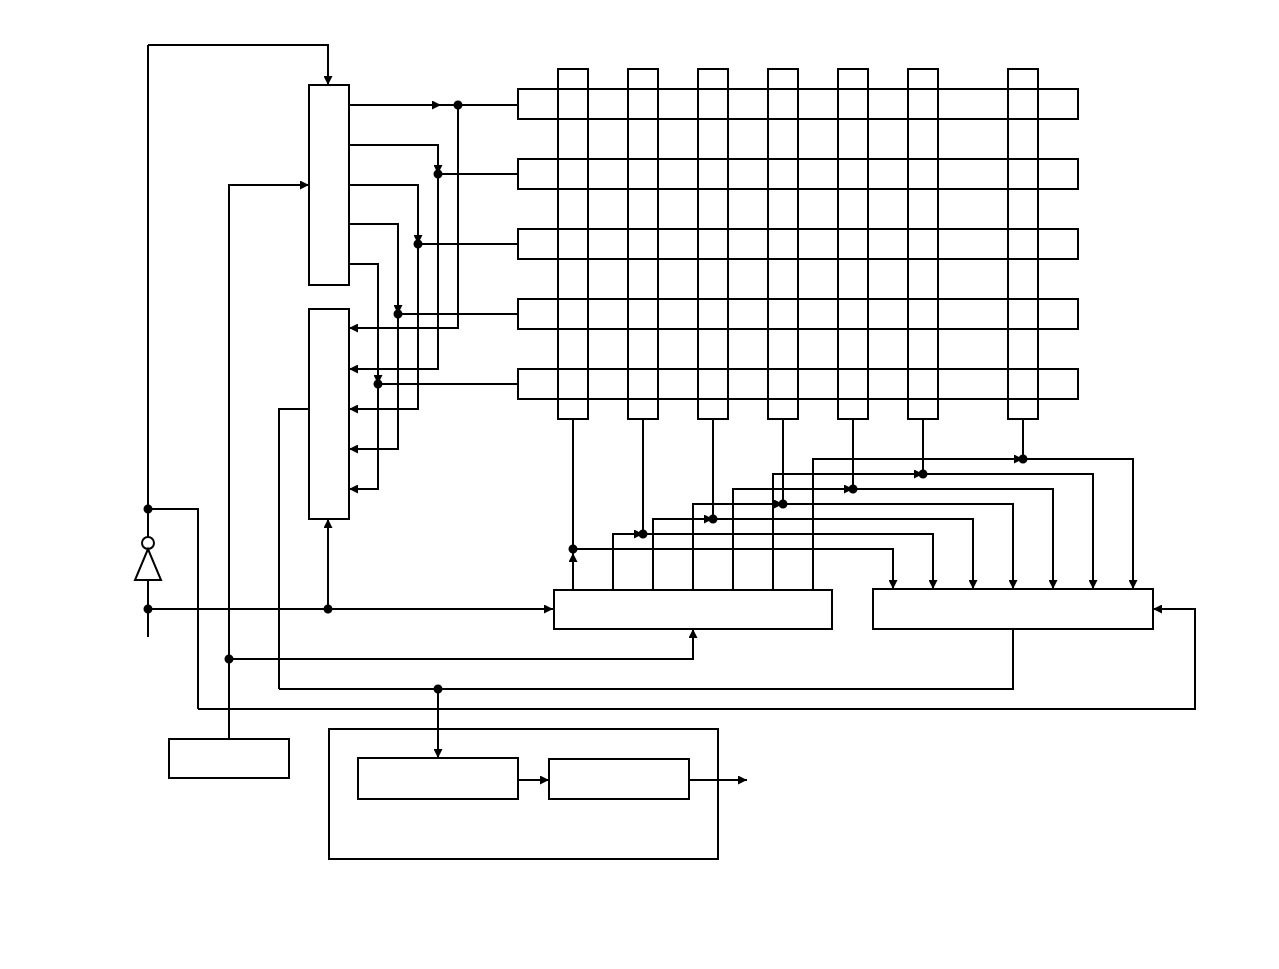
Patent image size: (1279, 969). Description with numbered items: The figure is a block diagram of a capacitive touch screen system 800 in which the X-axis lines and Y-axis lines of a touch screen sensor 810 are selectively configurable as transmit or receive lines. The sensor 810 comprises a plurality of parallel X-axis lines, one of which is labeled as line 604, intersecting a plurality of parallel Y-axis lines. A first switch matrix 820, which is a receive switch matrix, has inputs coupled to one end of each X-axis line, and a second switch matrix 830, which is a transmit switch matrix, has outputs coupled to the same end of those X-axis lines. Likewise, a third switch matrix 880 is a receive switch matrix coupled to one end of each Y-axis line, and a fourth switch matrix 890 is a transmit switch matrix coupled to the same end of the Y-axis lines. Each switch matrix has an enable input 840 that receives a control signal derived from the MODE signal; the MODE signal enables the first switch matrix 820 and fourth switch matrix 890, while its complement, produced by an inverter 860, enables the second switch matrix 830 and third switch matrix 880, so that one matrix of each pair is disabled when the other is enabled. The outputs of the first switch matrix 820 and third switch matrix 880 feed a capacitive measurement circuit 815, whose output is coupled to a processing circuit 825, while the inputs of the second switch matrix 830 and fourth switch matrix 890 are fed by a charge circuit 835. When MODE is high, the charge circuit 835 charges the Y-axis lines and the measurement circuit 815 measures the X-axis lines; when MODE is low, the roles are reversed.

The capacitive touch screen system 800 is at (1195, 93).
The sensor electrodes (X electrodes) 604 is at (1057, 159).
The touch screen sensor 810 is at (833, 240).
The first switch matrix 820 is at (309, 355).
The second switch matrix 830 is at (309, 131).
The enable input 840 is at (329, 66).
The inverter 860 is at (141, 562).
The charge circuit 835 is at (218, 779).
The capacitive measurement circuit 815 is at (437, 800).
The processing circuit 825 is at (620, 800).
The third switch matrix 880 is at (1088, 630).
The fourth switch matrix 890 is at (770, 630).